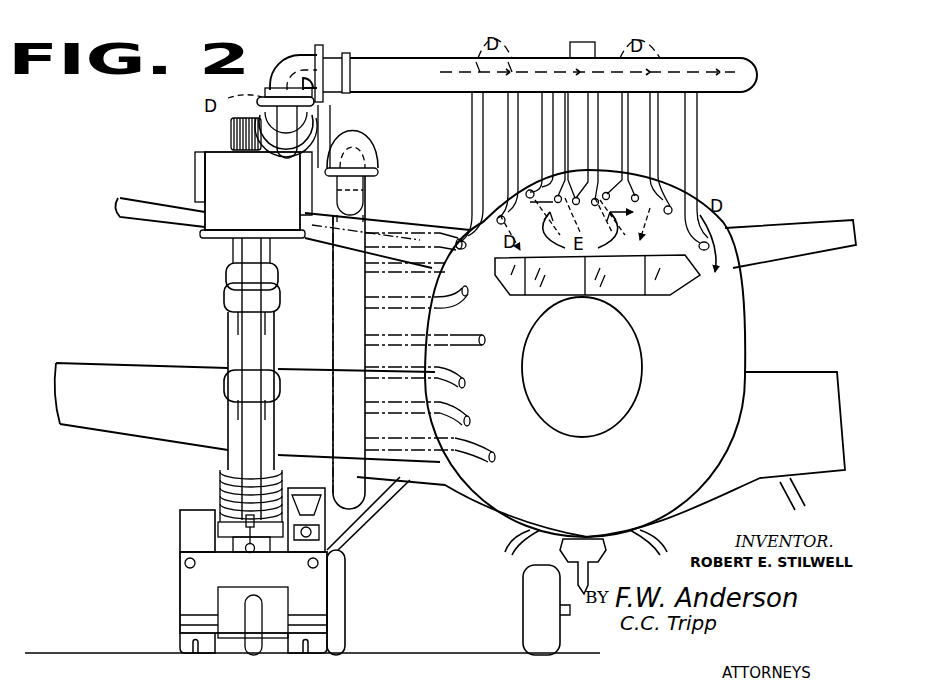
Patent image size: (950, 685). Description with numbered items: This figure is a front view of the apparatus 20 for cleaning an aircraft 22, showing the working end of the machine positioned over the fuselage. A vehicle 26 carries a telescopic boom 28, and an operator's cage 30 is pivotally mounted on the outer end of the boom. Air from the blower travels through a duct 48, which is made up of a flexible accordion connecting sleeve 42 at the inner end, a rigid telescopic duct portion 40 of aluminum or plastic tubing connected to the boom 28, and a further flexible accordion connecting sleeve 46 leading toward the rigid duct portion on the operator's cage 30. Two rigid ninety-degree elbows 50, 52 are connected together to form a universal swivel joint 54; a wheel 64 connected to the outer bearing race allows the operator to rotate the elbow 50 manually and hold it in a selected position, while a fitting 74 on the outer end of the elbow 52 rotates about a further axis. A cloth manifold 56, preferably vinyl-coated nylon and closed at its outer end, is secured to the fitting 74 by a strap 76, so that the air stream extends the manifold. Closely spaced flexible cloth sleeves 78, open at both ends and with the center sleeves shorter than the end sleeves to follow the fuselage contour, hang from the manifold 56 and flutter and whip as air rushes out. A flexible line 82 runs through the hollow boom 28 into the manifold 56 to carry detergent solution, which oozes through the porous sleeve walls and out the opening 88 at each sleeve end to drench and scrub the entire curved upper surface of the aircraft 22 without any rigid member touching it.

The apparatus 20 is at (208, 470).
The aircraft 22 is at (745, 308).
The vehicle 26 is at (190, 581).
The telescopic boom 28 is at (248, 372).
The operator's cage 30 is at (268, 216).
The rigid telescopic duct portion 40 is at (228, 336).
The flexible accordion connecting sleeve 42 is at (220, 491).
The flexible accordion connecting sleeve 46 is at (231, 132).
The duct 48 is at (226, 266).
The rigid 90° elbow 50 is at (279, 150).
The rigid 90° elbow 52 is at (304, 60).
The universal swivel joint 54 is at (265, 78).
The manifold 56 is at (722, 58).
The wheel 64 is at (318, 100).
The fitting 74 is at (333, 56).
The strap 76 is at (352, 60).
The sleeves 78 is at (548, 170).
The line 82 is at (366, 148).
The opening 88 is at (597, 224).